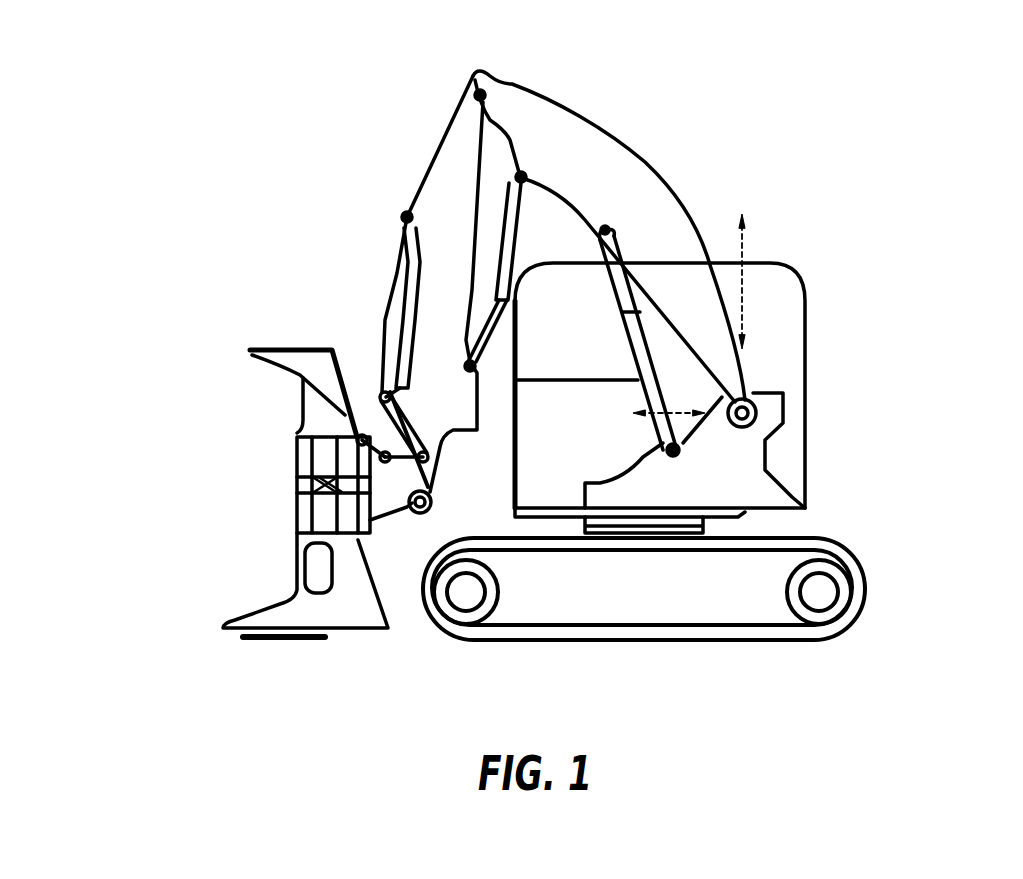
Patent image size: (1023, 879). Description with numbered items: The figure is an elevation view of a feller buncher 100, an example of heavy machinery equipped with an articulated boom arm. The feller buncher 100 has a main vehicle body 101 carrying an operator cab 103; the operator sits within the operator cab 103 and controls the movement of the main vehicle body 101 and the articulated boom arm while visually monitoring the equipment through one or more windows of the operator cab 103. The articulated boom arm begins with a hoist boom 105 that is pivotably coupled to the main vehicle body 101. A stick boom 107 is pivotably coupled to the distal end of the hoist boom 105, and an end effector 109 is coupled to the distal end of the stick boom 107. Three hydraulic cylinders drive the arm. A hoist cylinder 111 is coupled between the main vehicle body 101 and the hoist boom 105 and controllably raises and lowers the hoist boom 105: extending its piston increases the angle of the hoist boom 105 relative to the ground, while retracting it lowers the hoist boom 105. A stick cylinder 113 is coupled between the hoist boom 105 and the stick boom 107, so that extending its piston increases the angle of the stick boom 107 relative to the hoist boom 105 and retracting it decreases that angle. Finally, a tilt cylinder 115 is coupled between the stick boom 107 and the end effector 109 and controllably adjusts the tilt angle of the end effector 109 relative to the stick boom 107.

The feller buncher 100 is at (112, 142).
The main vehicle body 101 is at (806, 369).
The operator cab 103 is at (537, 350).
The hoist boom 105 is at (618, 140).
The stick boom 107 is at (420, 196).
The end effector 109 is at (298, 424).
The hoist cylinder 111 is at (640, 387).
The stick cylinder 113 is at (508, 213).
The tilt cylinder 115 is at (392, 308).